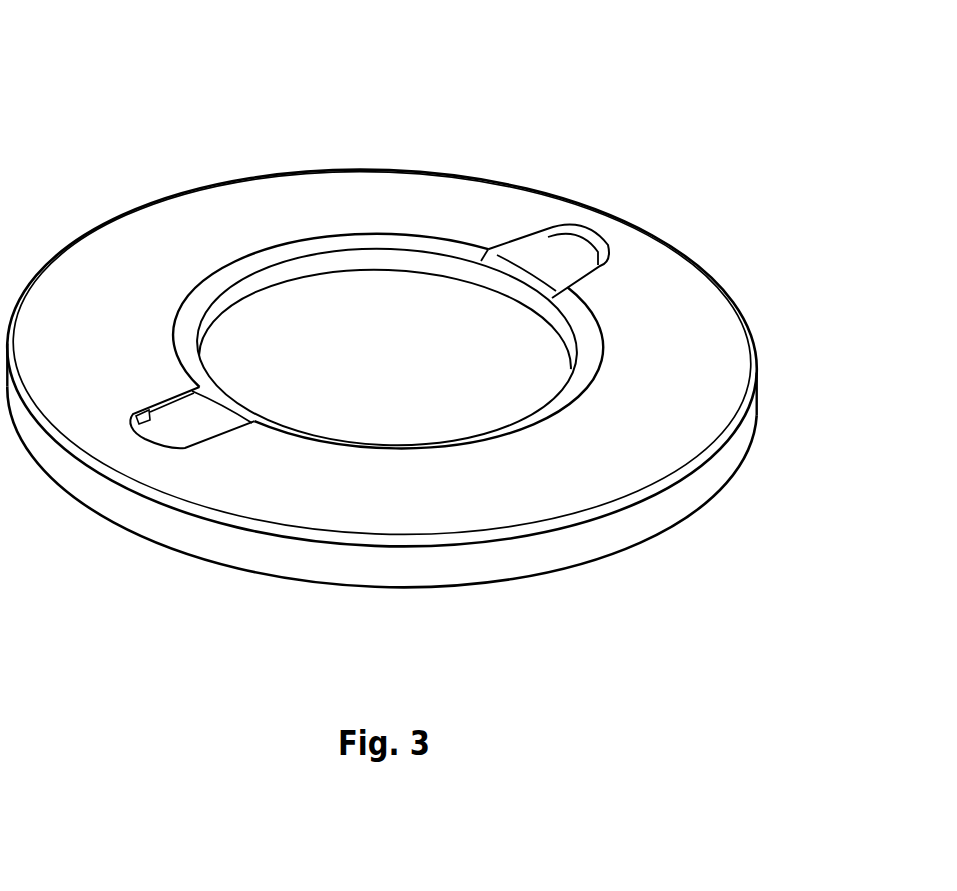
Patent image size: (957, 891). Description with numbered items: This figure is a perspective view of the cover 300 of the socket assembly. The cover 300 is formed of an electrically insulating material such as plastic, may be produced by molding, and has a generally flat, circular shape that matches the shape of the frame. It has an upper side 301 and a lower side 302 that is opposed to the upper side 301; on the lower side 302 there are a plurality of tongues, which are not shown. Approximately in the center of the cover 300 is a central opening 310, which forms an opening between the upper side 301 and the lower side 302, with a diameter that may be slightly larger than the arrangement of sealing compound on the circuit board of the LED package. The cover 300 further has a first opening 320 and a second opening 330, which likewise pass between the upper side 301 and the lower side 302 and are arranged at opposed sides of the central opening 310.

The cover 300 is at (158, 48).
The upper side 301 is at (275, 212).
The lower side 302 is at (472, 588).
The central opening 310 is at (513, 393).
The first opening 320 is at (563, 263).
The second opening 330 is at (160, 426).